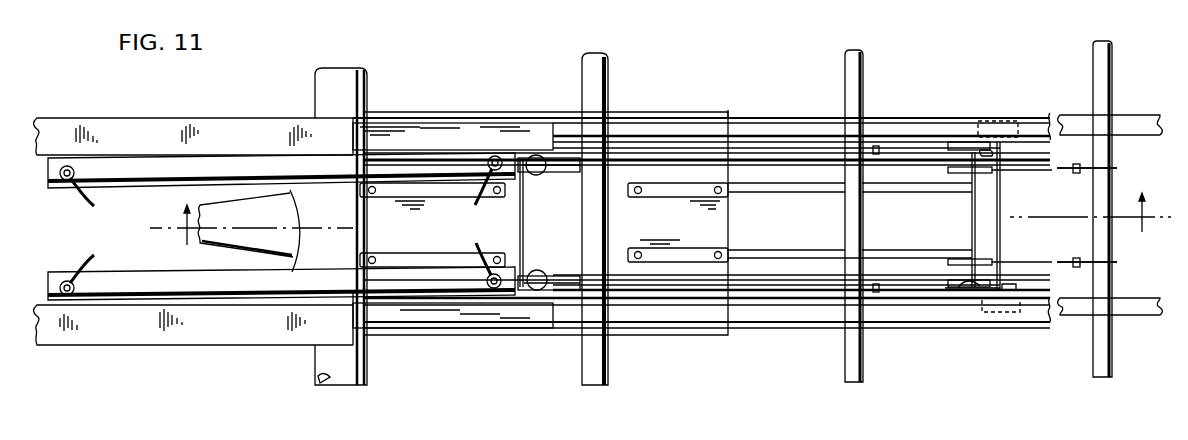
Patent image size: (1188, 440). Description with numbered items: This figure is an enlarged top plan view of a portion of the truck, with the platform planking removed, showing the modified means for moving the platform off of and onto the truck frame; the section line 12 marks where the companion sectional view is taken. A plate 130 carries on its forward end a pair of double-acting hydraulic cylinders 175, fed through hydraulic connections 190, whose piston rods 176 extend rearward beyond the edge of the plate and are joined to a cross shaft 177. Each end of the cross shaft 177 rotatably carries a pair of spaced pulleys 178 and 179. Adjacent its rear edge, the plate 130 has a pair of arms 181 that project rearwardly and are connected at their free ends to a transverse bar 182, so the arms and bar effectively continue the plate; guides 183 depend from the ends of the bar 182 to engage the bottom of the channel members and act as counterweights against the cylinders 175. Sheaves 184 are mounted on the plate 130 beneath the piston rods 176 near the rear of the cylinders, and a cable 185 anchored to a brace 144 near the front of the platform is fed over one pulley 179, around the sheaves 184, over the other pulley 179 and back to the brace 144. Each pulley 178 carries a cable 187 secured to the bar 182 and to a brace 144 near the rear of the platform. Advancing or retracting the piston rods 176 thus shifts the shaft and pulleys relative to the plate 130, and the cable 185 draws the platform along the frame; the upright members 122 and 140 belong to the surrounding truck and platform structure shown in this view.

The section line 12- 12 is at (660, 219).
The post 122 is at (332, 352).
The plate 130 is at (370, 208).
The post 140 is at (590, 345).
The brace 144 is at (853, 203).
The double-acting hydraulic cylinder 175 is at (110, 284).
The piston rod 176 is at (890, 164).
The cross shaft 177 is at (970, 205).
The pulley 178 is at (990, 182).
The pulley 179 is at (992, 154).
The arm 181 is at (755, 188).
The transverse bar 182 is at (1003, 207).
The guide 183 is at (1012, 282).
The sheave 184 is at (538, 173).
The cable 185 is at (523, 207).
The cable 187 is at (1076, 258).
The connection 190 is at (76, 261).